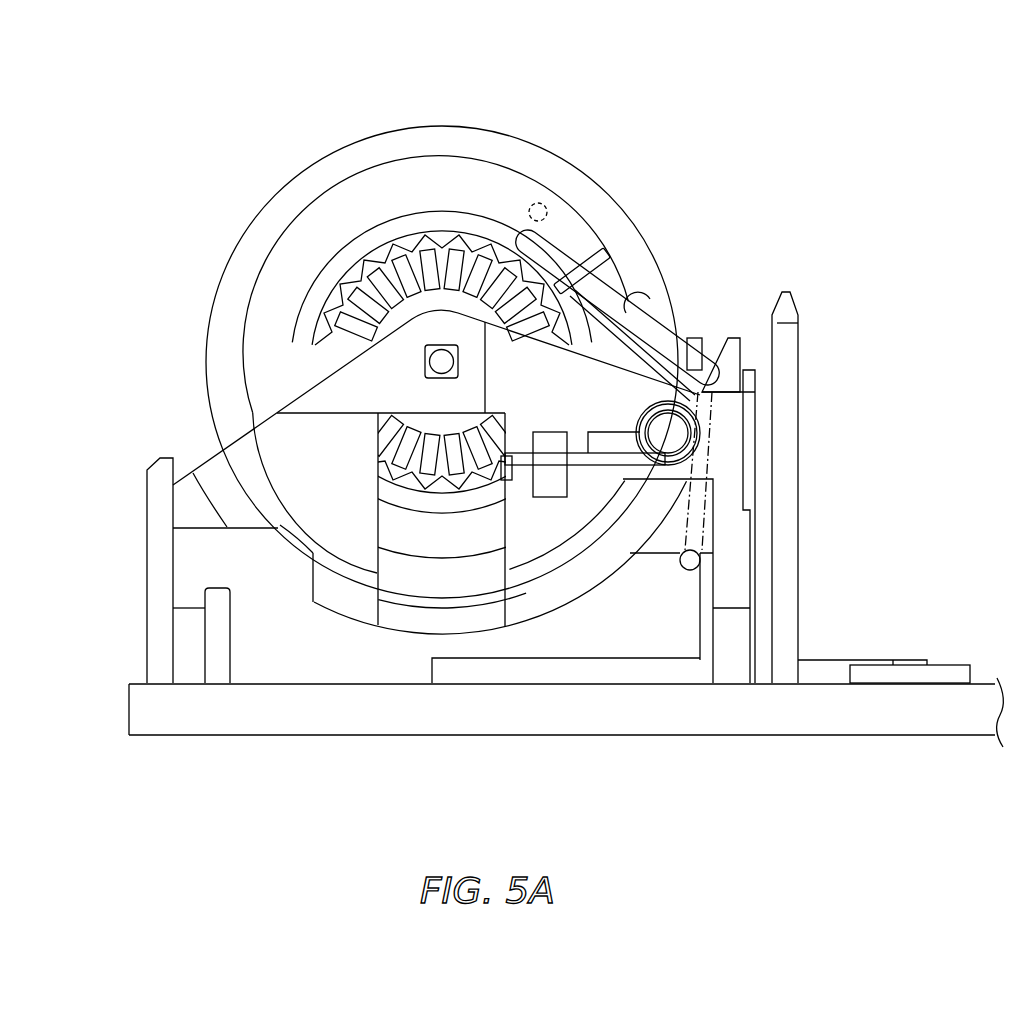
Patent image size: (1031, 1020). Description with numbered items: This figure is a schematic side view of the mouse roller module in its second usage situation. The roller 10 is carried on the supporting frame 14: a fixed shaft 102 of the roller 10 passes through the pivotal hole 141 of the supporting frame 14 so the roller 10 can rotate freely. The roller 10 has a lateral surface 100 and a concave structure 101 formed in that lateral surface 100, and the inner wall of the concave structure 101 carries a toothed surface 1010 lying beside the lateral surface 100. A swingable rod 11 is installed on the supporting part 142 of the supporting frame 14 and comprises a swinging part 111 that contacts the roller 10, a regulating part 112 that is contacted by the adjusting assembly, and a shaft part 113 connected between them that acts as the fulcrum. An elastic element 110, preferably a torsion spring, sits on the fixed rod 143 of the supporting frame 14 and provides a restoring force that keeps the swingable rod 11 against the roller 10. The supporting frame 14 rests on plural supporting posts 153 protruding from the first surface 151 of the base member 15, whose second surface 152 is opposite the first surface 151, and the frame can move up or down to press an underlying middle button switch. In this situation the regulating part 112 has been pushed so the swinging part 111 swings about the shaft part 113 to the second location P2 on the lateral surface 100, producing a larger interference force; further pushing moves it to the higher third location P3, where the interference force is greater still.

The roller 10 is at (525, 88).
The lateral surface 100 is at (489, 204).
The concave structure 101 is at (442, 326).
The toothed surface 1010 is at (363, 255).
The fixed shaft 102 is at (437, 356).
The elastic element 110 is at (600, 457).
The swingable rod 11 is at (713, 351).
The swinging part 111 is at (622, 212).
The regulating part 112 is at (700, 560).
The shaft part 113 is at (705, 378).
The supporting frame 14 is at (774, 569).
The pivotal hole 141 is at (410, 380).
The supporting part 142 is at (728, 357).
The fixed rod 143 is at (668, 440).
The base member 15 is at (566, 717).
The first surface 151 is at (339, 674).
The second surface 152 is at (389, 742).
The supporting posts 153 is at (788, 446).
The second location P2 is at (519, 210).
The third location P3 is at (553, 205).